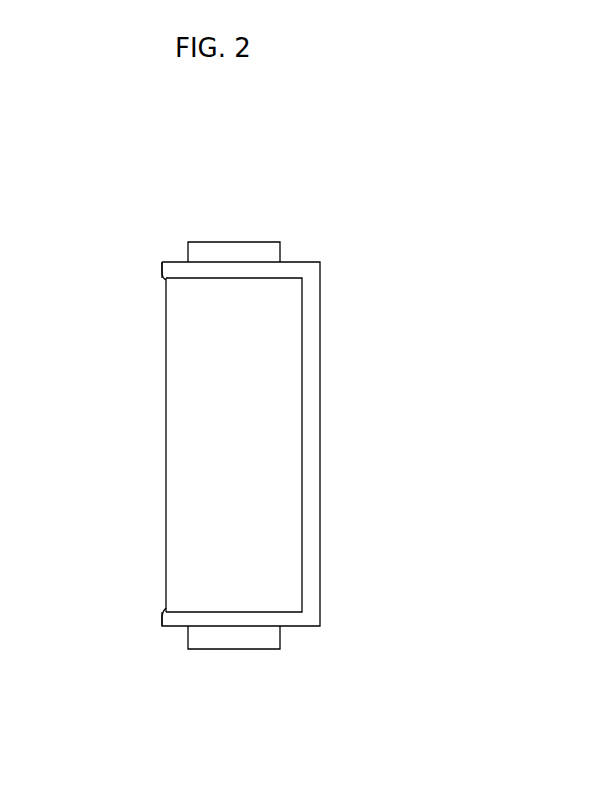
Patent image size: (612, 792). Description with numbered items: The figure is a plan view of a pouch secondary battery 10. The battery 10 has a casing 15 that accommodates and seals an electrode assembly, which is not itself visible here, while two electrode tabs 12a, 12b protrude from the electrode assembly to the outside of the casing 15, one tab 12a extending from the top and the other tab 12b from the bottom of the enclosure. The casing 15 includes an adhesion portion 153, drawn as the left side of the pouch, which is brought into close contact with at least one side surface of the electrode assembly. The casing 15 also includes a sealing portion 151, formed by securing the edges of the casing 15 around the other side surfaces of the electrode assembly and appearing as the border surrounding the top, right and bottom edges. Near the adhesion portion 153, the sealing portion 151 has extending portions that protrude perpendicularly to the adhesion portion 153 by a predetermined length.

The pouch secondary battery 10 is at (54, 149).
The electrode tab 12a is at (233, 254).
The electrode tab 12b is at (232, 637).
The casing 15 is at (345, 444).
The sealing portion 151 is at (311, 548).
The adhesion portion 153 is at (160, 445).